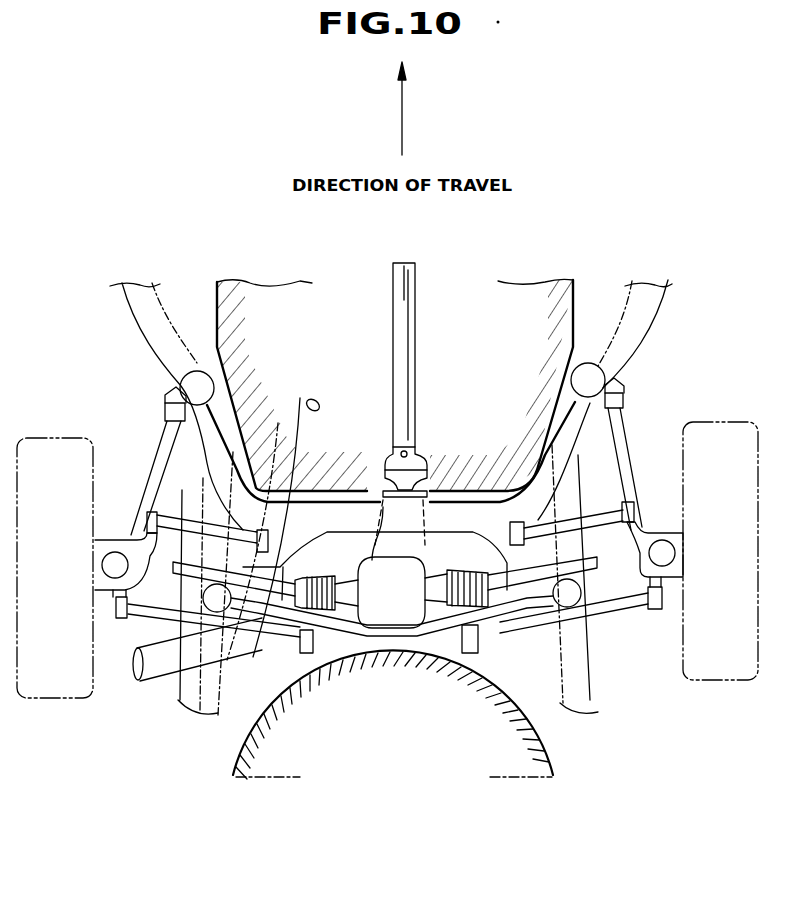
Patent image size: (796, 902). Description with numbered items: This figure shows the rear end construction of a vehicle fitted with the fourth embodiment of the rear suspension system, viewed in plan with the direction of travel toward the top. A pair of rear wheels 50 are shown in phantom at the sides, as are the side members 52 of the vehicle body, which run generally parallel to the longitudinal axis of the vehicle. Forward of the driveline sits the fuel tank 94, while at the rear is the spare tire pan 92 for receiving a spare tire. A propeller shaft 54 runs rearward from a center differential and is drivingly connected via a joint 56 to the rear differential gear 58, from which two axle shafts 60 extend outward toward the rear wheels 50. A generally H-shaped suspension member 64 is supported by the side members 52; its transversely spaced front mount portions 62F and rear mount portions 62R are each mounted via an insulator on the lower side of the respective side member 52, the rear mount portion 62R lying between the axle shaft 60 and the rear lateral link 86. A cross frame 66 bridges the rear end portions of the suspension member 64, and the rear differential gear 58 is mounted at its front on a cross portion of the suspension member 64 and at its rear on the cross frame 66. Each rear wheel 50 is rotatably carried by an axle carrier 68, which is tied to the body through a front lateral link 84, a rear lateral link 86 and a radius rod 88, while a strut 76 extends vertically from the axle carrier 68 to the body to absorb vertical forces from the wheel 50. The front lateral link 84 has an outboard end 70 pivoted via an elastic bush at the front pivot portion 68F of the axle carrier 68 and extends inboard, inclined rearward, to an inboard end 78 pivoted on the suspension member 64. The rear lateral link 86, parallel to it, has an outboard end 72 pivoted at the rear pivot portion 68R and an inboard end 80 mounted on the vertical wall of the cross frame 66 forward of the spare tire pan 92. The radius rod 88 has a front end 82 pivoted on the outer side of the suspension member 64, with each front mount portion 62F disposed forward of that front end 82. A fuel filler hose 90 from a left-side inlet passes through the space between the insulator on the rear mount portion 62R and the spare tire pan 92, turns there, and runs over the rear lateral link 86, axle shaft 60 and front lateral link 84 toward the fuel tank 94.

The rear wheel 50 is at (55, 700).
The side member 52 is at (120, 305).
The propeller shaft 54 is at (416, 282).
The joint 56 is at (390, 462).
The rear differential gear 58 is at (413, 562).
The axle shaft 60 is at (190, 576).
The front mount portion 62F is at (188, 385).
The rear mount portion 62R is at (205, 585).
The suspension member 64 is at (250, 414).
The cross frame 66 is at (405, 633).
The axle carrier 68 is at (102, 568).
The front pivot portion 68F is at (147, 525).
The rear pivot portion 68R is at (120, 600).
The outboard end of front lateral link 70 is at (143, 512).
The outboard end of rear lateral link 72 is at (116, 608).
The strut 76 is at (110, 556).
The inboard end of front lateral link 78 is at (270, 540).
The inboard end of rear lateral link 80 is at (300, 648).
The front end of radius rod 82 is at (166, 413).
The front lateral link 84 is at (181, 522).
The rear lateral link 86 is at (165, 625).
The radius rod 88 is at (160, 448).
The fuel filler hose 90 is at (160, 682).
The spare tire pan 92 is at (548, 758).
The fuel tank 94 is at (214, 292).